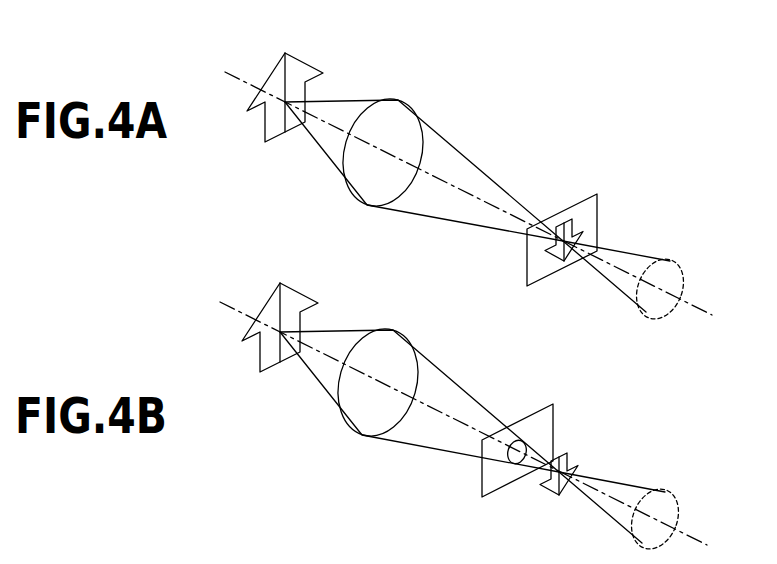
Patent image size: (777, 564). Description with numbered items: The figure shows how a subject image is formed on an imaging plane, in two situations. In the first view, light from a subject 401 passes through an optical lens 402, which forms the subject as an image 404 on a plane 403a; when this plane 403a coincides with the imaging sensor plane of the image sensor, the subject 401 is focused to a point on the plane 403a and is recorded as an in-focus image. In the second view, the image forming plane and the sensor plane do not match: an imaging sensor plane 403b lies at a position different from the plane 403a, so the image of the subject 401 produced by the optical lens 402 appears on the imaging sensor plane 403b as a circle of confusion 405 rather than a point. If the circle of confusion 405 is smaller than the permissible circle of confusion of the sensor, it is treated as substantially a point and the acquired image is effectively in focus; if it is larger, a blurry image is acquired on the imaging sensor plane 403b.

In FIG. 4A, the subject 401 is at (306, 64).
In FIG. 4B, the subject 401 is at (301, 294).
In FIG. 4A, the optical lens 402 is at (405, 101).
In FIG. 4B, the optical lens 402 is at (400, 331).
In FIG. 4A, the plane 403a is at (598, 204).
In FIG. 4B, the imaging sensor plane 403b is at (553, 411).
In FIG. 4A, the image 404 is at (556, 224).
In FIG. 4B, the image 404 is at (567, 451).
In FIG. 4B, the circle of confusion 405 is at (512, 440).